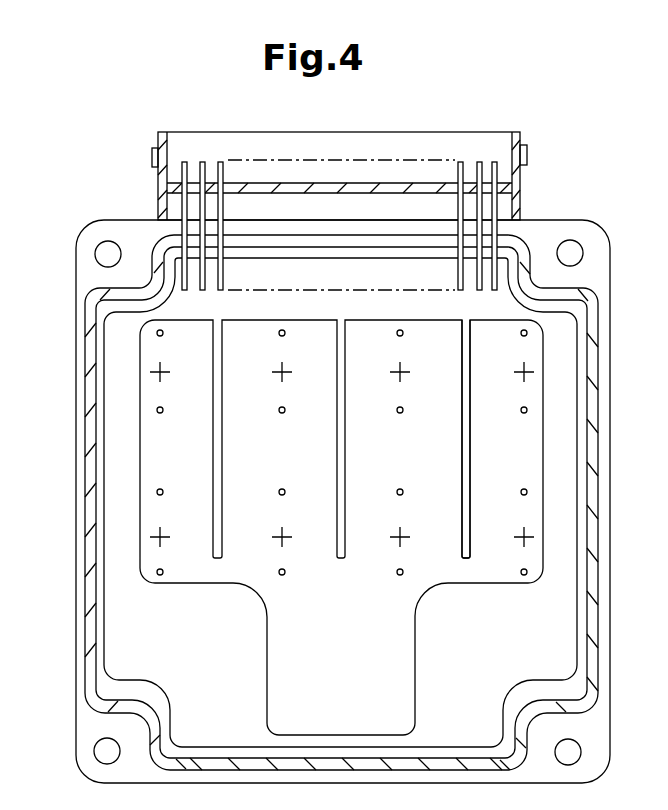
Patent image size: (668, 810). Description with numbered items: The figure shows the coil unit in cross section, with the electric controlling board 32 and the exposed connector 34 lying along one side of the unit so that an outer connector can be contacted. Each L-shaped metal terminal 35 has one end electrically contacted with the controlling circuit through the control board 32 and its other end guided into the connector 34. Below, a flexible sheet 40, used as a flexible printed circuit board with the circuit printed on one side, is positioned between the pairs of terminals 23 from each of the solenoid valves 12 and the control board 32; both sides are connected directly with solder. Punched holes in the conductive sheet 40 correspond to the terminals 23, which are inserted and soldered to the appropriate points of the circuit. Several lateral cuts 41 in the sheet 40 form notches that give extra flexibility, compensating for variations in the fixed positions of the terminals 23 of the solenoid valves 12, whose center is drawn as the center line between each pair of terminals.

The electric controlling board 32 is at (118, 630).
The connector 34 is at (513, 135).
The terminal 35 is at (181, 164).
The flexible sheet 40 is at (163, 472).
The lateral cut 41 is at (470, 440).
The terminal 23 is at (157, 410).
The solenoid valve 12 is at (155, 537).